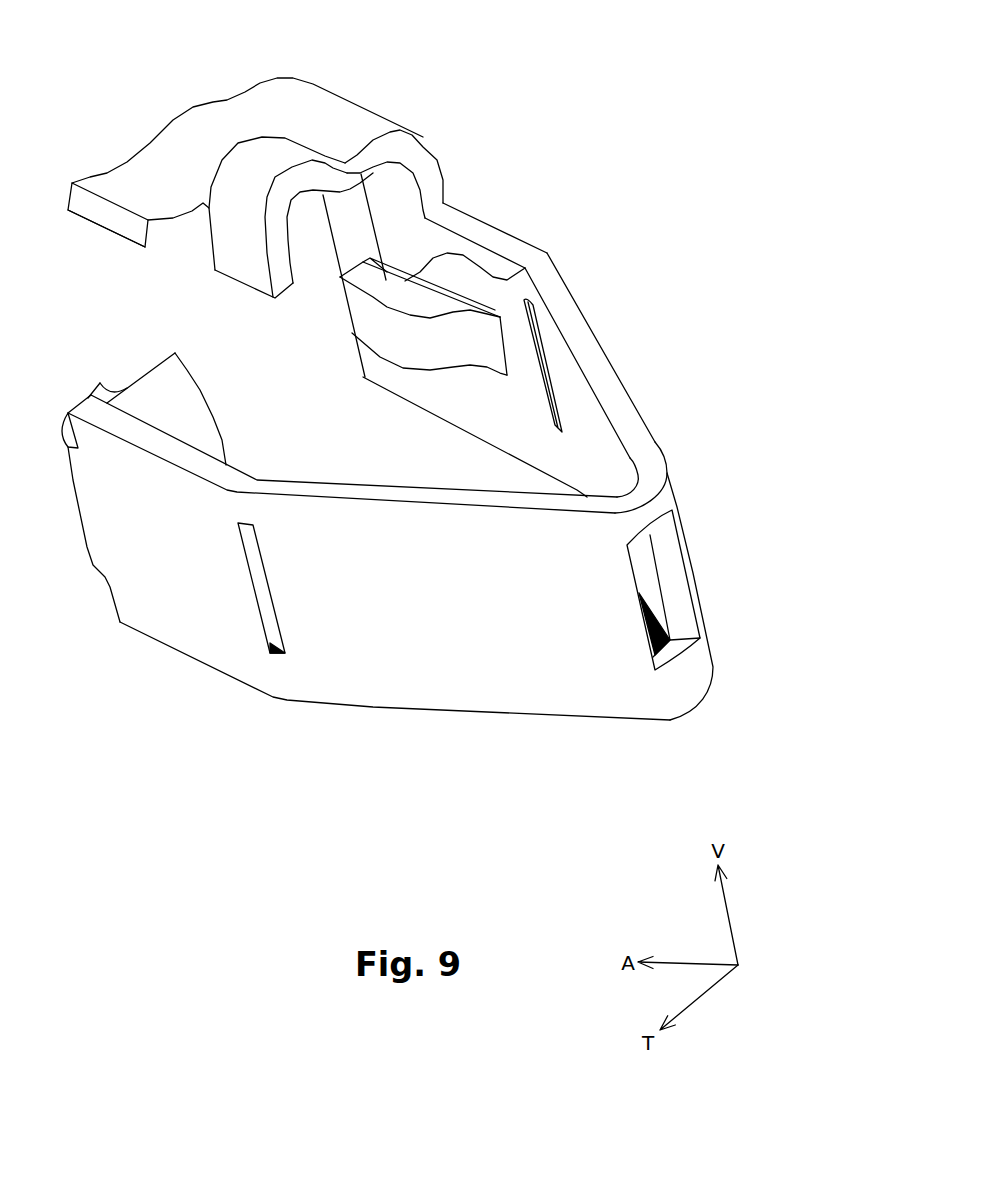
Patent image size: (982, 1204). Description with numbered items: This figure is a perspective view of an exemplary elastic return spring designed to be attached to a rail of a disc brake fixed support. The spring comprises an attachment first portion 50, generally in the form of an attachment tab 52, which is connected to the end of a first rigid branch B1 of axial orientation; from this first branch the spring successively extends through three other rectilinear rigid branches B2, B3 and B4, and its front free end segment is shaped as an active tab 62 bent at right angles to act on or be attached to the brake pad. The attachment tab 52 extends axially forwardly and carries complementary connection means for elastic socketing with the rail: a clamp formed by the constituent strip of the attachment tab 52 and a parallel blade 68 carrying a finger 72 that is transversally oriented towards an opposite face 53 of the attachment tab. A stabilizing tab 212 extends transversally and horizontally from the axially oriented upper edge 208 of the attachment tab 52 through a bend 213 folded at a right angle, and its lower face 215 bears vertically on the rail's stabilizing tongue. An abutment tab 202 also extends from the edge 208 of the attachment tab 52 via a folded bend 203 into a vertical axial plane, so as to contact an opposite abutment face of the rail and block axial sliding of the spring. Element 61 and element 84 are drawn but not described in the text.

The attachment first portion 50 is at (283, 322).
The attachment tab 52 is at (512, 224).
The opposite face 53 is at (423, 376).
The recess 61 is at (185, 423).
The active tab 62 is at (193, 367).
The parallel blade 68 is at (424, 279).
The finger 72 is at (383, 285).
The support block 84 is at (373, 297).
The abutment tab 202 is at (292, 265).
The folded bend 203 is at (240, 158).
The upper edge 208 is at (458, 227).
The stabilizing tab 212 is at (157, 160).
The bend 213 is at (423, 137).
The lower face 215 is at (180, 243).
The first rigid branch B1 is at (503, 398).
The second rigid branch B2 is at (657, 428).
The third rigid branch B3 is at (432, 713).
The fourth rigid branch B4 is at (198, 605).